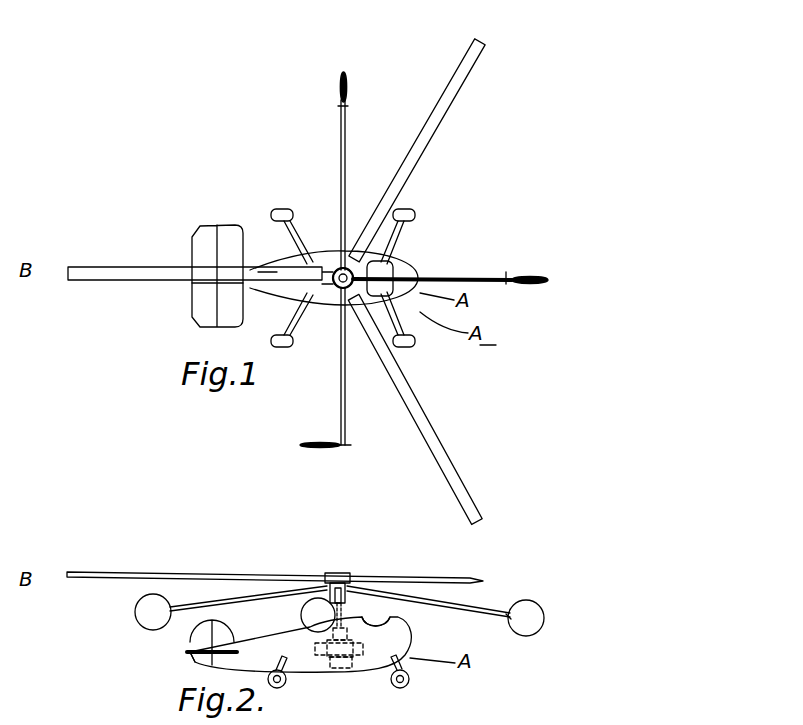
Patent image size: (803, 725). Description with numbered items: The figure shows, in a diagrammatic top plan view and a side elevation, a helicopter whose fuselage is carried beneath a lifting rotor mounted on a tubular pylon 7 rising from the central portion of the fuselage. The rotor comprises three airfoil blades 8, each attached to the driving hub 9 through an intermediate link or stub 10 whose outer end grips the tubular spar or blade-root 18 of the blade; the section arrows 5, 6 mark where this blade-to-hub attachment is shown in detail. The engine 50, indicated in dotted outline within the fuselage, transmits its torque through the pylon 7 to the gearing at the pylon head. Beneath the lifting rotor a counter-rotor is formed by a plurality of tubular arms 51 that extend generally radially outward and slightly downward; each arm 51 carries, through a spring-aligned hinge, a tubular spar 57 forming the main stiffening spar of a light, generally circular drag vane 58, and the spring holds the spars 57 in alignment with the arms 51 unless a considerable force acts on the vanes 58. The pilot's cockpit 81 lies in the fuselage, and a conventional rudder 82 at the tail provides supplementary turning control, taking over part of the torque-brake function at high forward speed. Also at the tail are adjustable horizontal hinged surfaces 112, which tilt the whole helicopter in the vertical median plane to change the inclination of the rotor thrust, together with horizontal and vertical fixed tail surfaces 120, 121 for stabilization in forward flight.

In FIG. 2, the section line 5- 5 is at (299, 571).
In FIG. 1, the landing gear struts and pads 6 is at (262, 296).
In FIG. 1, the tubular pylon 7 is at (391, 242).
In FIG. 1, the airfoil blades 8 is at (100, 280).
In FIG. 2, the airfoil blades 8 is at (112, 572).
In FIG. 1, the driving hub 9 is at (343, 266).
In FIG. 2, the driving hub 9 is at (343, 574).
In FIG. 2, the intermediate link or stub 10 is at (346, 610).
In FIG. 2, the tubular spar or blade-root 18 is at (331, 572).
In FIG. 2, the engine 50 is at (323, 658).
In FIG. 1, the tubular arms 51 is at (341, 160).
In FIG. 2, the tubular arms 51 is at (233, 598).
In FIG. 1, the tubular spar 57 is at (347, 107).
In FIG. 2, the tubular spar 57 is at (506, 620).
In FIG. 1, the drag vanes 58 is at (347, 82).
In FIG. 2, the drag vanes 58 is at (142, 618).
In FIG. 2, the pilot's cockpit 81 is at (386, 620).
In FIG. 2, the rudder 82 is at (192, 644).
In FIG. 1, the horizontal hinged surfaces 112 is at (200, 236).
In FIG. 2, the horizontal hinged surfaces 112 is at (198, 660).
In FIG. 1, the horizontal fixed tail surface 120 is at (232, 322).
In FIG. 2, the horizontal fixed tail surface 120 is at (268, 679).
In FIG. 2, the vertical fixed tail surface 121 is at (226, 641).